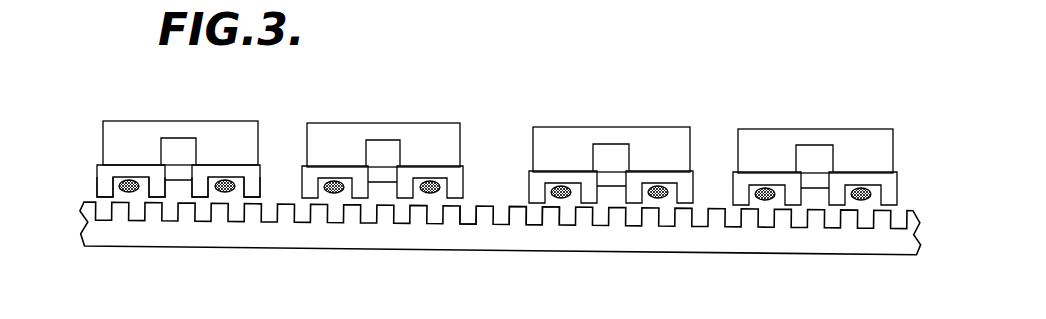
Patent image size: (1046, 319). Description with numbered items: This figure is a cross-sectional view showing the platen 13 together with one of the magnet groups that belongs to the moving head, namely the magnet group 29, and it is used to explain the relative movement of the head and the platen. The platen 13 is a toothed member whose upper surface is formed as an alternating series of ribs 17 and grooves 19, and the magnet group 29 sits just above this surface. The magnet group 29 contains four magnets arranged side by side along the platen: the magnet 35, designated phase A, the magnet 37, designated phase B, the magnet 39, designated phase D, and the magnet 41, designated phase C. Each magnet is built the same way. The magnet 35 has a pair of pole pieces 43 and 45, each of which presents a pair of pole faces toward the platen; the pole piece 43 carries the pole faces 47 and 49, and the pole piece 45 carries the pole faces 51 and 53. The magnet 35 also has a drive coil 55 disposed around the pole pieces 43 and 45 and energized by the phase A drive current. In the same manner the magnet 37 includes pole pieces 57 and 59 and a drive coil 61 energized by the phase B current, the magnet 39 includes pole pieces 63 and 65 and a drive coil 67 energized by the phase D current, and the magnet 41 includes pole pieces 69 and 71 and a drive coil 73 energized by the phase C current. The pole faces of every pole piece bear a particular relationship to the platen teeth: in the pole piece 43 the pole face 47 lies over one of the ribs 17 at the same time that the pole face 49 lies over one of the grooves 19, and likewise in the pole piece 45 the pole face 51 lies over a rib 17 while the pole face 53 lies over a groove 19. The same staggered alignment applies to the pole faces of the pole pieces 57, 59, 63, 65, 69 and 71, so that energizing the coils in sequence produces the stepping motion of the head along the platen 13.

The magnet group 29 is at (493, 160).
The platen 13 is at (353, 235).
The rib 17 is at (515, 217).
The groove 19 is at (503, 217).
The magnet 35 is at (237, 128).
The magnet 37 is at (445, 130).
The magnet 39 is at (663, 133).
The magnet 41 is at (870, 138).
The pole piece 43 is at (100, 170).
The pole piece 45 is at (255, 170).
The pole face 47 is at (107, 197).
The pole face 49 is at (157, 197).
The pole face 51 is at (200, 197).
The pole face 53 is at (253, 197).
The drive coil 55 is at (177, 181).
The pole piece 57 is at (311, 188).
The pole piece 59 is at (455, 177).
The drive coil 61 is at (383, 182).
The pole piece 63 is at (537, 190).
The pole piece 65 is at (673, 180).
The drive coil 67 is at (608, 188).
The pole piece 69 is at (740, 189).
The pole piece 71 is at (877, 180).
The drive coil 73 is at (812, 192).